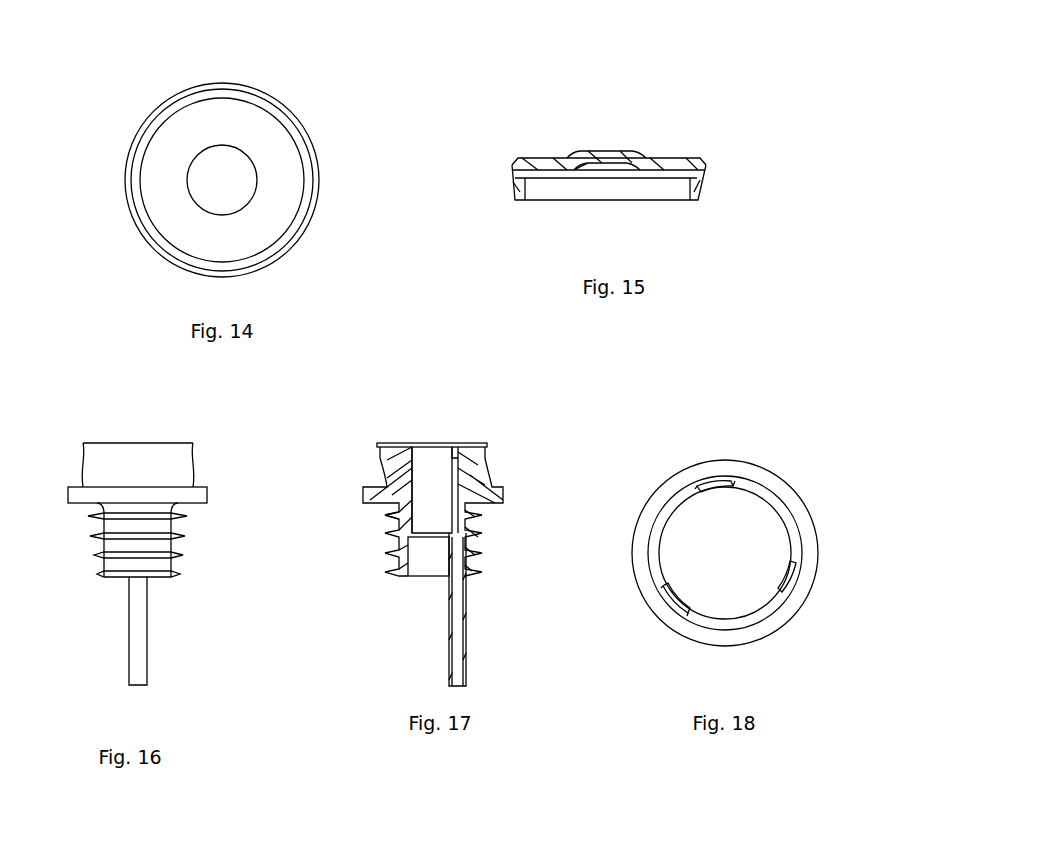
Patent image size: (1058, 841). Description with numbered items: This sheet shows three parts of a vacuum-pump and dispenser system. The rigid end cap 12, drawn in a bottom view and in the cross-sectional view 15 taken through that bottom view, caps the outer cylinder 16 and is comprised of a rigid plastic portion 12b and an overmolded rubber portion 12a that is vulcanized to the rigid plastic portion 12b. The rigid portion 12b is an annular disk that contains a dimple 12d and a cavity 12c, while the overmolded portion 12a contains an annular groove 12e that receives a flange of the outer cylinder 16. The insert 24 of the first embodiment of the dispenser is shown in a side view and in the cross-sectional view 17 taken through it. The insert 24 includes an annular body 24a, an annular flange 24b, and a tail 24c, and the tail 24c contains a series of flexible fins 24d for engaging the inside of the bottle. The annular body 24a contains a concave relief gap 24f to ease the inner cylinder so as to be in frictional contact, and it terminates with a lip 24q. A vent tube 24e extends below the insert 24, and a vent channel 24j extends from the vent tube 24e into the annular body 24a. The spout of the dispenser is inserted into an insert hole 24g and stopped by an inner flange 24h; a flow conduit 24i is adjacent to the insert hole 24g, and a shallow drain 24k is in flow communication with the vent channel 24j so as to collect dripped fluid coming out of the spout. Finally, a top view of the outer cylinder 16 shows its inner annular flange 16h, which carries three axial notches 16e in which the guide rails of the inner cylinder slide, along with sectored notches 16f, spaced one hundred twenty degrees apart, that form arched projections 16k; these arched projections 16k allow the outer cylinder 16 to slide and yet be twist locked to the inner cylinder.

In FIG. 14, the rigid end cap 12 is at (316, 102).
In FIG. 15, the rigid end cap 12 is at (640, 117).
In FIG. 15, the overmolded rubber portion 12a is at (700, 192).
In FIG. 15, the rigid plastic portion 12b is at (668, 165).
In FIG. 15, the cavity 12c is at (612, 167).
In FIG. 15, the dimple 12d is at (590, 163).
In FIG. 15, the annular groove 12e is at (677, 175).
In FIG. 14, the cross-sectional view 15- 15 is at (104, 180).
In FIG. 16, the insert 24 is at (148, 540).
In FIG. 17, the insert 24 is at (450, 530).
In FIG. 16, the annular body 24a is at (160, 443).
In FIG. 16, the annular flange 24b is at (195, 495).
In FIG. 16, the tail 24c is at (170, 560).
In FIG. 16, the flexible fins 24d is at (97, 574).
In FIG. 16, the vent tube 24e is at (143, 647).
In FIG. 16, the concave relief gap 24f is at (83, 472).
In FIG. 17, the insert hole 24g is at (425, 455).
In FIG. 17, the inner flange 24h is at (400, 530).
In FIG. 17, the flow conduit 24i is at (425, 560).
In FIG. 17, the vent channel 24j is at (458, 645).
In FIG. 17, the shallow drain 24k is at (455, 450).
In FIG. 17, the lip 24q is at (490, 443).
In FIG. 16, the cross-sectional view 17- 17 is at (138, 711).
In FIG. 18, the outer cylinder 16 is at (710, 512).
In FIG. 18, the axial notches 16e is at (724, 486).
In FIG. 18, the sectored notches 16f is at (692, 492).
In FIG. 18, the inner annular flange 16h is at (771, 505).
In FIG. 18, the arched projections 16k is at (790, 567).